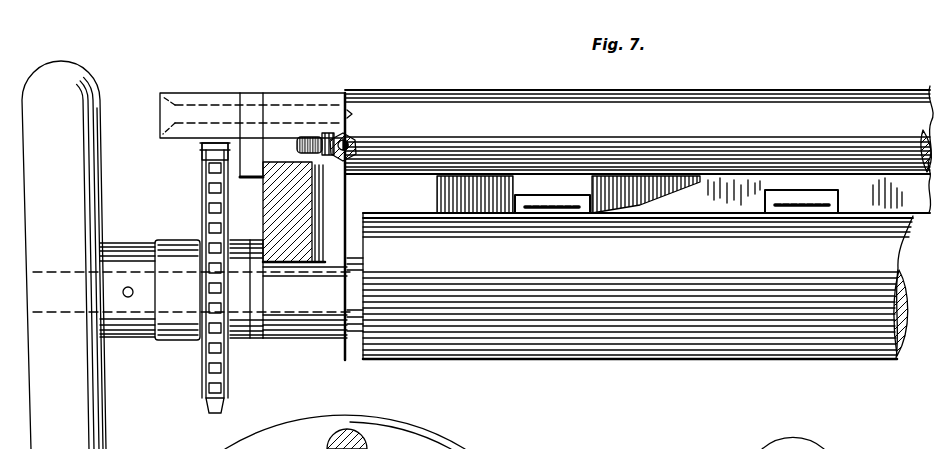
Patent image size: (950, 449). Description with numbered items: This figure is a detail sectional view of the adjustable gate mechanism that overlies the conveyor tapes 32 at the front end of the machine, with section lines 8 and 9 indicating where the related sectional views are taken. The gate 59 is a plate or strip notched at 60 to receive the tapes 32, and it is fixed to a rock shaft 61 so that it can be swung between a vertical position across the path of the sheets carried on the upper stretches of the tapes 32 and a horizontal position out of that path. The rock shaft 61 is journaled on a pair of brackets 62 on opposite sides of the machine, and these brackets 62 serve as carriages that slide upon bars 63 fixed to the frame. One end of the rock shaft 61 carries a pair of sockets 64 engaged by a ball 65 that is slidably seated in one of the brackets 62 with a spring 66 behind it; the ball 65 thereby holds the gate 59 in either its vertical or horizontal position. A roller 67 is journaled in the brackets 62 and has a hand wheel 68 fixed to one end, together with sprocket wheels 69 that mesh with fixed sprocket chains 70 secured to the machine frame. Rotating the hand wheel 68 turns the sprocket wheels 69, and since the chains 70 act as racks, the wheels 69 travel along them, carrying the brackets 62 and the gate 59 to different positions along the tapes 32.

The section line 8- 8 is at (556, 430).
The section line 9- 9 is at (342, 90).
The conveyor tapes 32 is at (563, 213).
The gate 59 is at (917, 213).
The notches 60 is at (519, 214).
The rock shaft 61 is at (639, 149).
The brackets 62 is at (289, 103).
The bars 63 is at (299, 263).
The sockets 64 is at (350, 141).
The ball 65 is at (336, 133).
The spring 66 is at (295, 147).
The roller 67 is at (627, 361).
The hand wheel 68 is at (106, 445).
The sprocket wheels 69 is at (202, 368).
The sprocket chains 70 is at (200, 160).